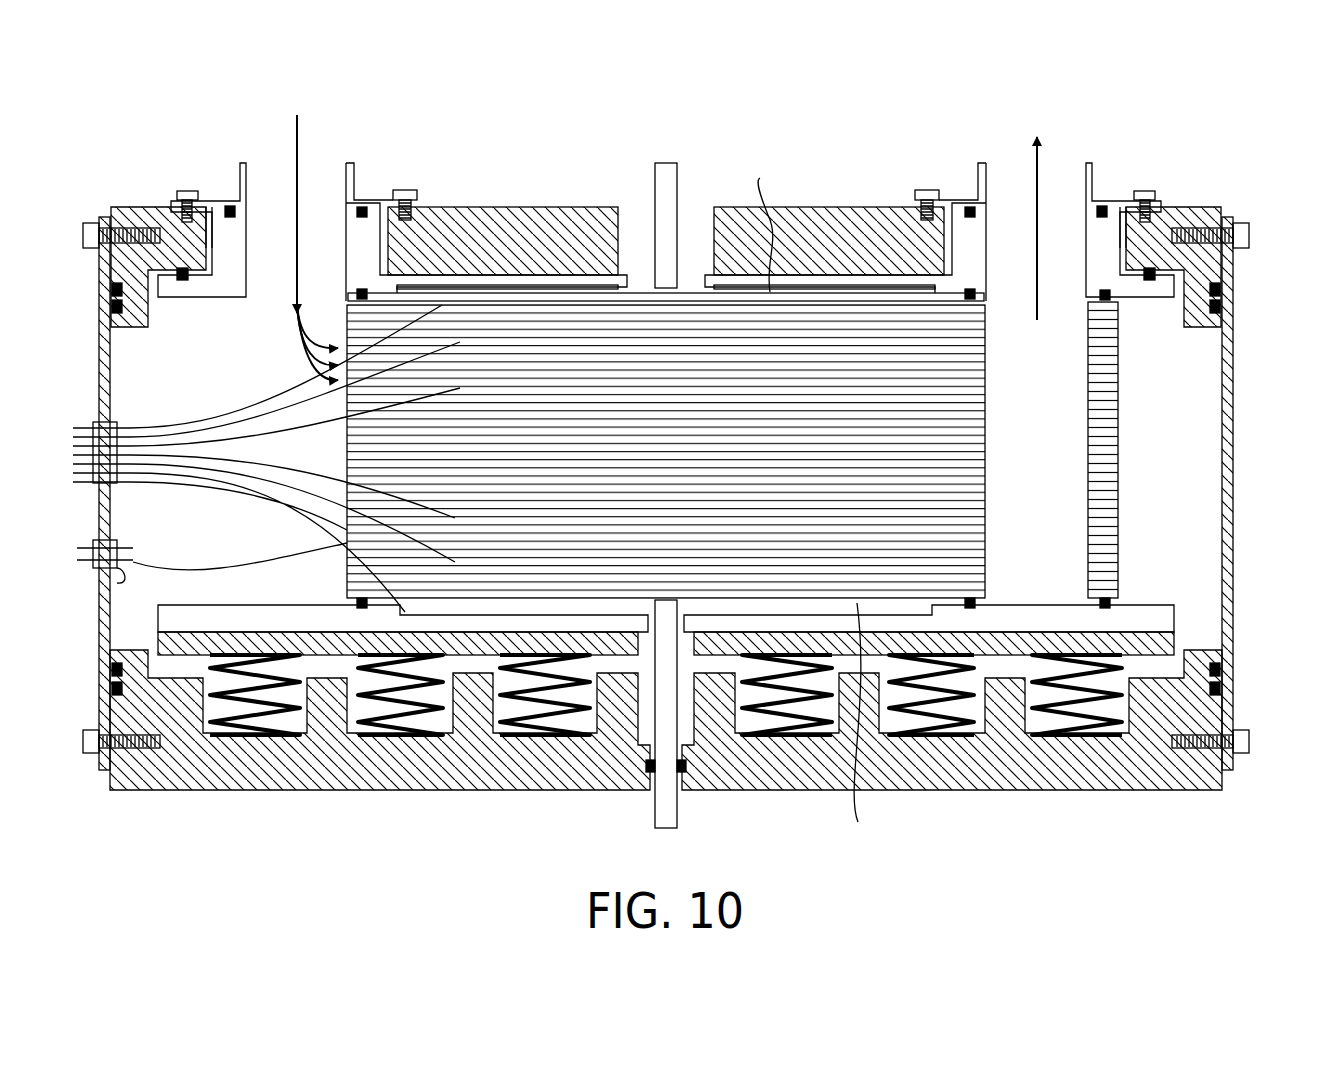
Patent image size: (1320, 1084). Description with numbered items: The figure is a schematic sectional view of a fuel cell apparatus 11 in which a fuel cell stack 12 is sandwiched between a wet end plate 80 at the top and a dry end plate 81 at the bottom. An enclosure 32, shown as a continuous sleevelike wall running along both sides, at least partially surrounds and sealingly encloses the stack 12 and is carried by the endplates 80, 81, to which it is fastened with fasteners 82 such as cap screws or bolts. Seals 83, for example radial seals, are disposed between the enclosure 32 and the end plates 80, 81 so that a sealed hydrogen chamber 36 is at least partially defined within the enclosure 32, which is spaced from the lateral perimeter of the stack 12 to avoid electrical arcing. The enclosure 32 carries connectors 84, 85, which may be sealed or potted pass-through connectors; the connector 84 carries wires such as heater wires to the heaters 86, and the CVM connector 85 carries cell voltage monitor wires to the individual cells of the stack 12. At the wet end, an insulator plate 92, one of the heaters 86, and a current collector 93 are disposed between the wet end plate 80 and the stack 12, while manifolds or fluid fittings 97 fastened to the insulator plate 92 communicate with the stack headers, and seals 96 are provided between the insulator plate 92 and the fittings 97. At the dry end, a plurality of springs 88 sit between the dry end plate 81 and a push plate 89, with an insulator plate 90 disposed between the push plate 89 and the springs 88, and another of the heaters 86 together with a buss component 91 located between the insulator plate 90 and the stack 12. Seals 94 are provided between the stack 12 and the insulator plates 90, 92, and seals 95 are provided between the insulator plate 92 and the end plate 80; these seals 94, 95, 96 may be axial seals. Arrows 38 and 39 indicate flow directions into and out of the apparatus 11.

The fuel cell apparatus 11 is at (163, 113).
The fuel cell stack 12 is at (340, 452).
The enclosure 32 is at (100, 342).
The sealed hydrogen chamber 36 is at (190, 558).
The inlet flow arrow 38 is at (270, 163).
The outlet flow arrow 39 is at (1008, 193).
The wet end plate 80 is at (148, 212).
The dry end plate 81 is at (323, 768).
The fasteners 82 is at (118, 228).
The seals 83 is at (112, 306).
The connector 84 is at (90, 578).
The CVM connector 85 is at (90, 472).
The heaters 86 is at (817, 502).
The springs 88 is at (245, 715).
The push plate 89 is at (165, 645).
The insulator plate 90 is at (165, 625).
The buss component 91 is at (672, 603).
The insulator plate 92 is at (230, 247).
The current collector 93 is at (672, 290).
The seals 94 is at (357, 296).
The seals 95 is at (182, 281).
The seals 96 is at (230, 205).
The fluid fittings 97 is at (356, 178).